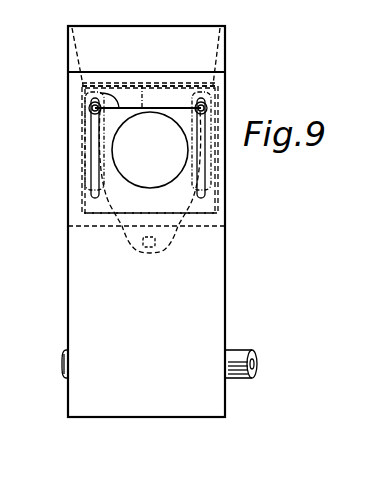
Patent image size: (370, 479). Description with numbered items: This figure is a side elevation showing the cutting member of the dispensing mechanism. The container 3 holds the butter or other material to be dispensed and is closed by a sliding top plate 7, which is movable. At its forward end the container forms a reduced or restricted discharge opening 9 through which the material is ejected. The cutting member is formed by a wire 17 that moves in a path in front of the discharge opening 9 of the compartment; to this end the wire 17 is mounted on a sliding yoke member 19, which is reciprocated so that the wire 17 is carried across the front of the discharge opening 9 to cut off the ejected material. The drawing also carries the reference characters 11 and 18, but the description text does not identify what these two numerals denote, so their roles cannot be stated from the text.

The container 3 is at (222, 187).
The sliding top plate 7 is at (164, 84).
The discharge opening 9 is at (149, 181).
The knob 11 is at (271, 336).
The wire 17 is at (96, 97).
The disc 18 is at (150, 150).
The sliding yoke member 19 is at (188, 207).